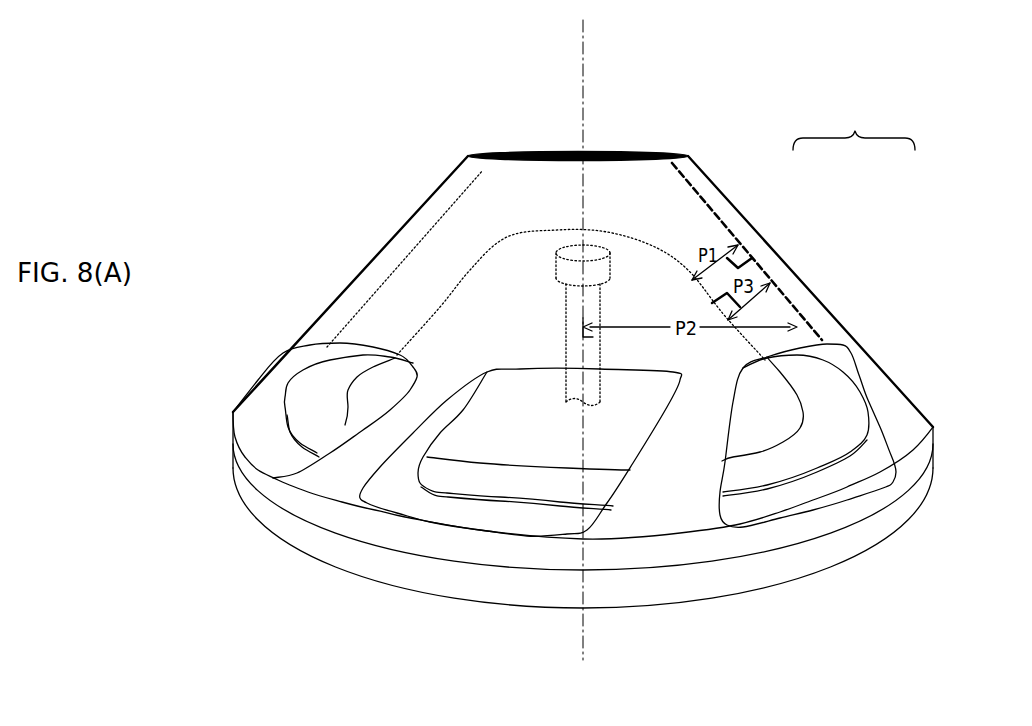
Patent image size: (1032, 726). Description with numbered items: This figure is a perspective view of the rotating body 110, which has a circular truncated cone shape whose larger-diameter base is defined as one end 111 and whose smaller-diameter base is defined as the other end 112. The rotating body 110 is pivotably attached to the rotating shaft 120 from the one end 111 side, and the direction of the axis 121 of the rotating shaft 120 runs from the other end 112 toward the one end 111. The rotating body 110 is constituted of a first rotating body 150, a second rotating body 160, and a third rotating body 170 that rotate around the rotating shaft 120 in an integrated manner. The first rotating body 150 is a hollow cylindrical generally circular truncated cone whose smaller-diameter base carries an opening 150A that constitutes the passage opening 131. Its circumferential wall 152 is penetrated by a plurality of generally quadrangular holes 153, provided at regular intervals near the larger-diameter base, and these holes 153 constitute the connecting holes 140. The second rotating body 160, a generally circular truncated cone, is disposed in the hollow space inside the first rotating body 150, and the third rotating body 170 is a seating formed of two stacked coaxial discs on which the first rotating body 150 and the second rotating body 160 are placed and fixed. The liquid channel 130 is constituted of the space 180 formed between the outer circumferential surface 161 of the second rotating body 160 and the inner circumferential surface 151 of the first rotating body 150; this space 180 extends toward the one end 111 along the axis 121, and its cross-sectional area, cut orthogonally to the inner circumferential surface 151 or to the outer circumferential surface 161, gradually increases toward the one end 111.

The rotating body 110 is at (854, 129).
The one end 111 is at (640, 617).
The other end 112 is at (583, 234).
The rotating shaft 120 is at (596, 251).
The axis 121 is at (618, 334).
The liquid channel 130 is at (736, 219).
The space 180 is at (672, 232).
The passage opening 131 is at (499, 132).
The opening 150A is at (578, 112).
The connecting holes 140 is at (787, 420).
The first rotating body 150 is at (592, 342).
The inner circumferential surface 151 is at (762, 181).
The circumferential wall 152 is at (325, 302).
The holes 153 is at (576, 307).
The second rotating body 160 is at (794, 305).
The outer circumferential surface 161 is at (550, 209).
The third rotating body 170 is at (814, 338).